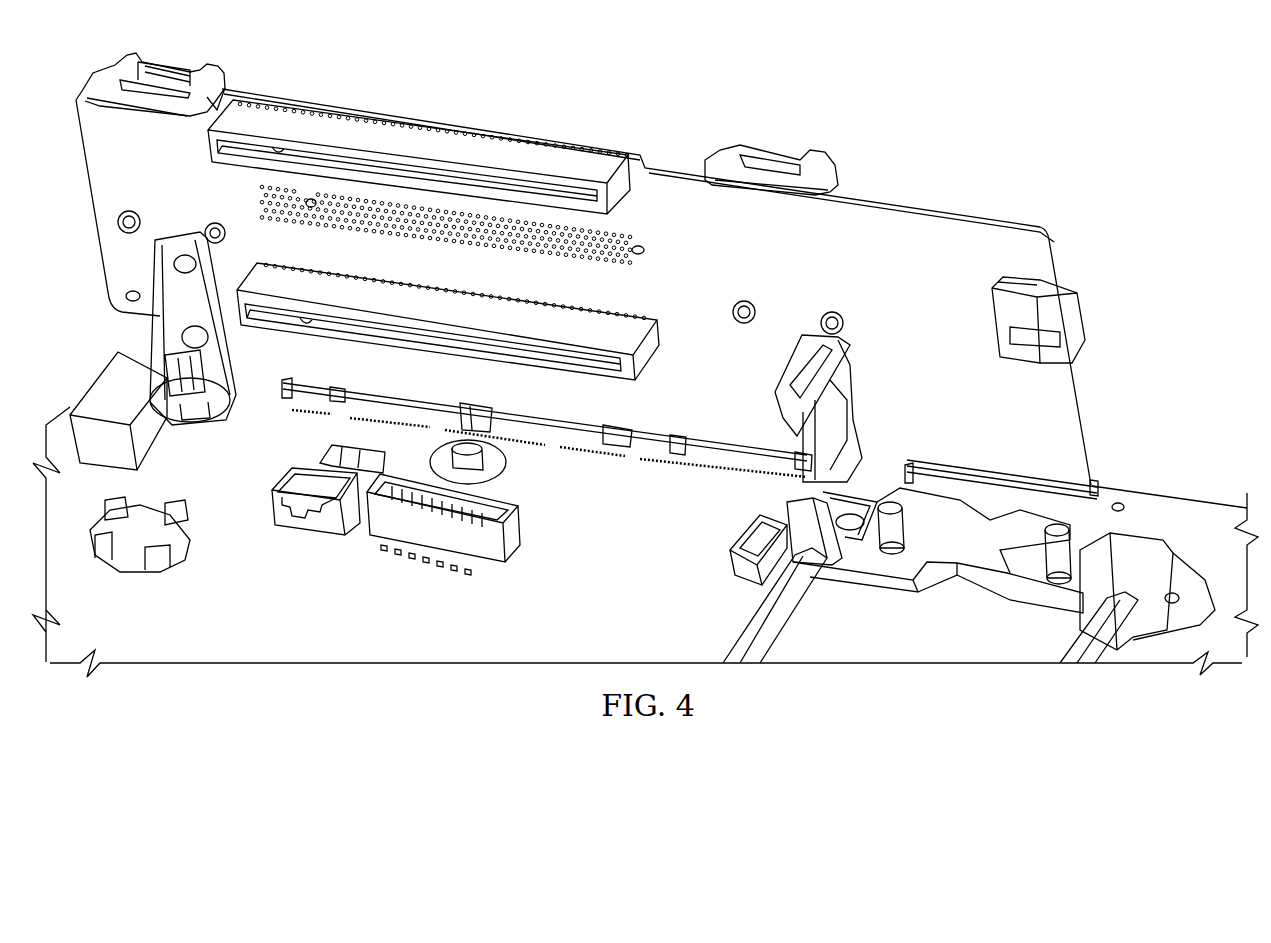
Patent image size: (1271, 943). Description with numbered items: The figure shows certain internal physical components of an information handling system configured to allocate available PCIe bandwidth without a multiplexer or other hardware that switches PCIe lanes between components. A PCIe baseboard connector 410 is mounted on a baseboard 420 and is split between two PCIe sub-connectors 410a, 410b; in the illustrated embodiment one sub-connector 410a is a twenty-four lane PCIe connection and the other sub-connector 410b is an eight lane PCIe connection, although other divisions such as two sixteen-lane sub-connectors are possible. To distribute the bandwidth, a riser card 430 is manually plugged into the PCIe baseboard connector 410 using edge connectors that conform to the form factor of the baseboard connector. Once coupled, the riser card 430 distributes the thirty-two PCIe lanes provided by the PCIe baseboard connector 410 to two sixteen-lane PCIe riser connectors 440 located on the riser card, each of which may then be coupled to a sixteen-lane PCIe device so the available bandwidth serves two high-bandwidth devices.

The PCIe baseboard connector 410 is at (936, 460).
The PCIe sub-connector 410a is at (381, 410).
The PCIe sub-connector 410b is at (1005, 475).
The baseboard 420 is at (555, 647).
The riser card 430 is at (940, 235).
The ×16 lane PCIe riser connector 440 is at (700, 283).